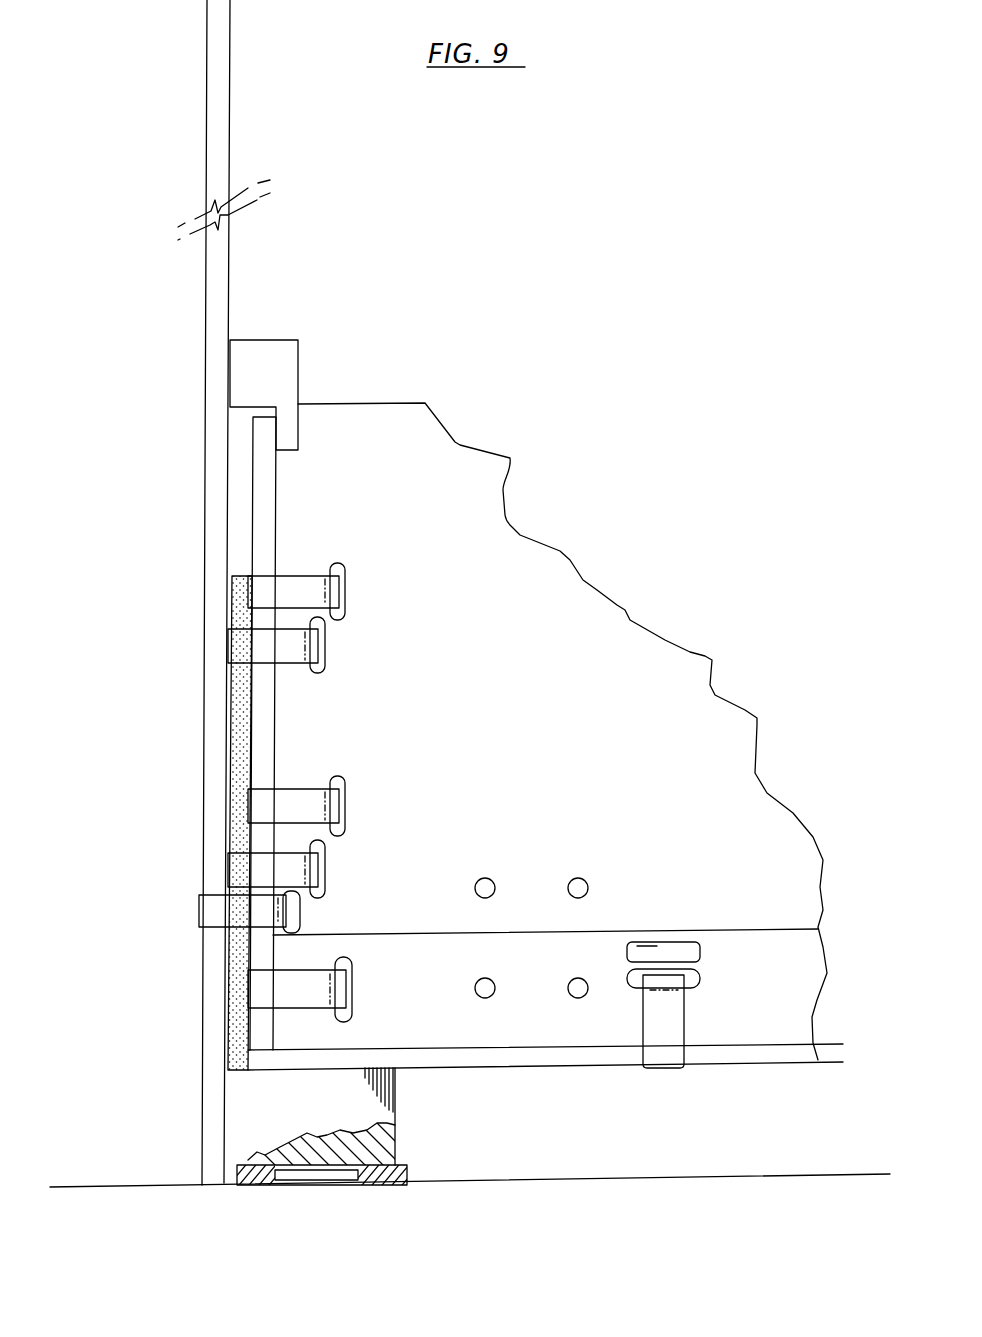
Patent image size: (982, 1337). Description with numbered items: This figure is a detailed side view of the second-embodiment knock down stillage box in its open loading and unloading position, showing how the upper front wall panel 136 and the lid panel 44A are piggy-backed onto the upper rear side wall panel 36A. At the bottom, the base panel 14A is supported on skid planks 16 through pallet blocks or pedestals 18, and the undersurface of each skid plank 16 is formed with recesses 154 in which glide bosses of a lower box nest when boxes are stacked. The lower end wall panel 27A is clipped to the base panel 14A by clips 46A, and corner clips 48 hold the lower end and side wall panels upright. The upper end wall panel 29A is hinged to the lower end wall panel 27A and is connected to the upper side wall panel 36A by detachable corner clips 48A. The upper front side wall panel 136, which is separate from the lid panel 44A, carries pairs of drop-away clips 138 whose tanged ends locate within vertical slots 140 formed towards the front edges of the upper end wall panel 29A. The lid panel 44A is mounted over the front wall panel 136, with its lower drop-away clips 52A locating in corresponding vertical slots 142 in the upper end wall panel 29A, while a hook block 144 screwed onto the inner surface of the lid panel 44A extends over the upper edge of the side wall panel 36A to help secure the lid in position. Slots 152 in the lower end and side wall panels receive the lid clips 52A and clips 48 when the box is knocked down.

The base panel 14A is at (538, 1058).
The skid planks 16 is at (407, 1170).
The pallet blocks or pedestals 18 is at (395, 1108).
The lower end wall panel 27A is at (462, 1033).
The upper end wall panel 29A is at (552, 797).
The upper side wall panel 36A is at (278, 492).
The top or lid panel 44A is at (215, 533).
The clips 46A is at (676, 1020).
The corner clips 48 is at (254, 996).
The detachable corner clips 48A is at (282, 582).
The drop-away clips 52A is at (199, 915).
The upper front side wall panel 136 is at (241, 742).
The drop-away clips 138 is at (306, 645).
The vertical slots 140 is at (328, 663).
The vertical slots 142 is at (300, 915).
The hook block 144 is at (290, 338).
The slots 152 is at (667, 952).
The recesses 154 is at (322, 1188).